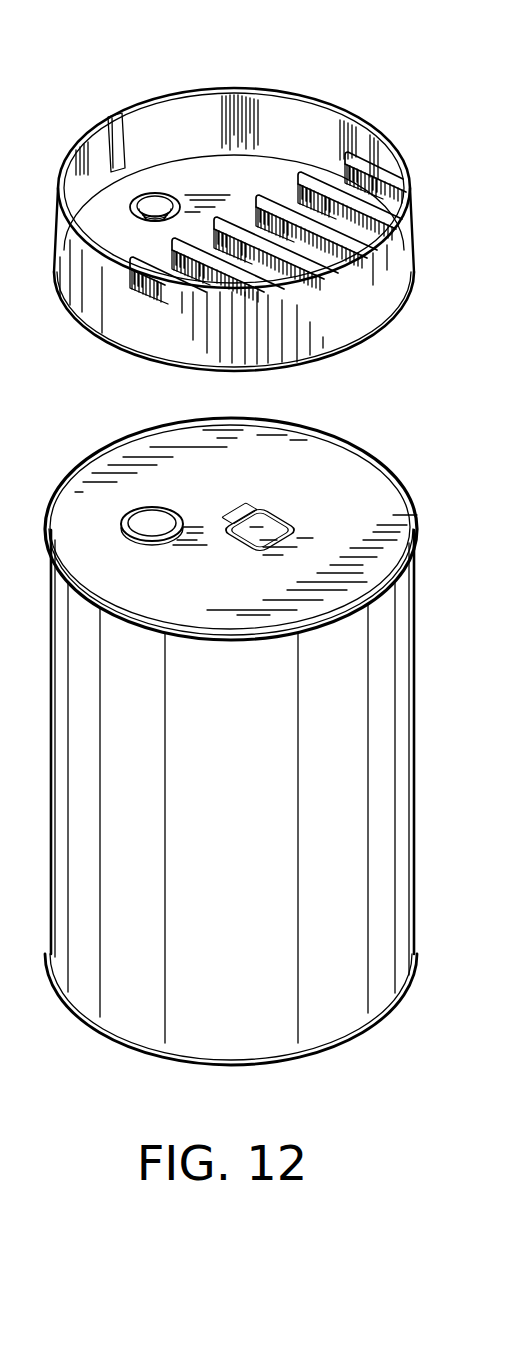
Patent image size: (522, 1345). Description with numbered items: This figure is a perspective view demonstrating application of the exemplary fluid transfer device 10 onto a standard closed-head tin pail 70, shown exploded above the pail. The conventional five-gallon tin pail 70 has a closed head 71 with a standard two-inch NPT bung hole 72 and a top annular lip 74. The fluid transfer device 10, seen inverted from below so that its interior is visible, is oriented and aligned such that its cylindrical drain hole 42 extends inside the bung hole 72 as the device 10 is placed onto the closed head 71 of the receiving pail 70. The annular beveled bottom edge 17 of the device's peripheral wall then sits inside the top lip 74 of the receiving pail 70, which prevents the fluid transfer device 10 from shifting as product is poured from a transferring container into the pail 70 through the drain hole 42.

The fluid transfer device 10 is at (251, 187).
The bottom edge 17 is at (380, 322).
The cylindrical drain hole 42 is at (153, 200).
The tin pail 70 is at (243, 811).
The closed head 71 is at (75, 505).
The bung hole 72 is at (160, 515).
The top annular lip 74 is at (363, 460).